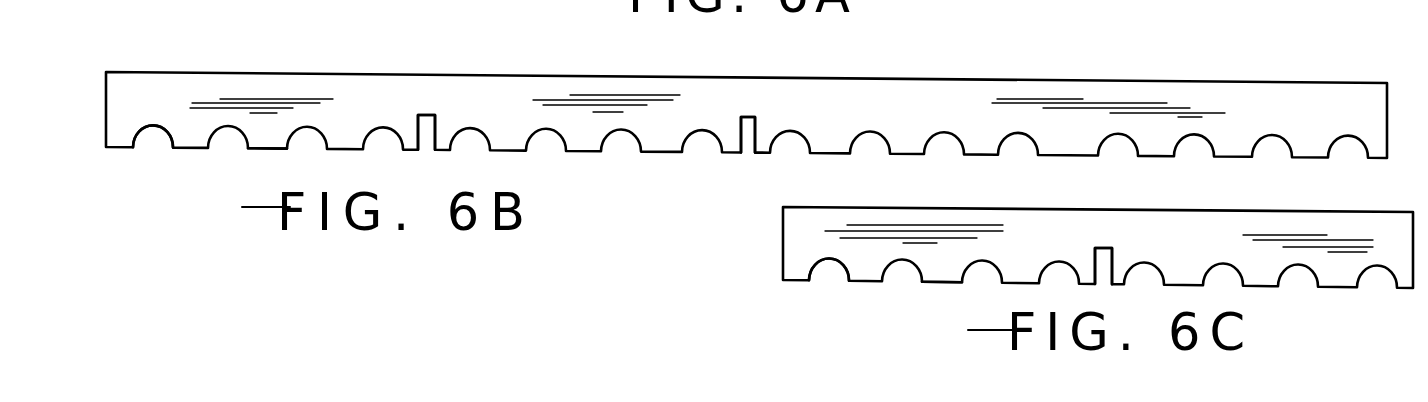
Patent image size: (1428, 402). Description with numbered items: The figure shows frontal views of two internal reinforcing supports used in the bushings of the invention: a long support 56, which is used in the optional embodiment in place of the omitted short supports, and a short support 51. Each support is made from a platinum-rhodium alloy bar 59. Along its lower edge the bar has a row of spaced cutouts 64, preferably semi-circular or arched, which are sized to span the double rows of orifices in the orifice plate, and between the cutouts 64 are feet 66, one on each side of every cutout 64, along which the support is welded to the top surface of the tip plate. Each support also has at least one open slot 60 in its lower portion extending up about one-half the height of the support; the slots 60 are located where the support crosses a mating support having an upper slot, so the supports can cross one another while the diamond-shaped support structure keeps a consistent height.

In FIG. 6C, the short support 51 is at (1353, 230).
In FIG. 6B, the support 56 is at (426, 78).
In FIG. 6B, the platinum-rhodium alloy bar 59 is at (135, 92).
In FIG. 6B, the open slot 60 is at (427, 149).
In FIG. 6C, the open slot 60 is at (1103, 262).
In FIG. 6B, the cutout 64 is at (293, 145).
In FIG. 6C, the cutout 64 is at (978, 278).
In FIG. 6B, the foot 66 is at (122, 149).
In FIG. 6C, the foot 66 is at (793, 282).